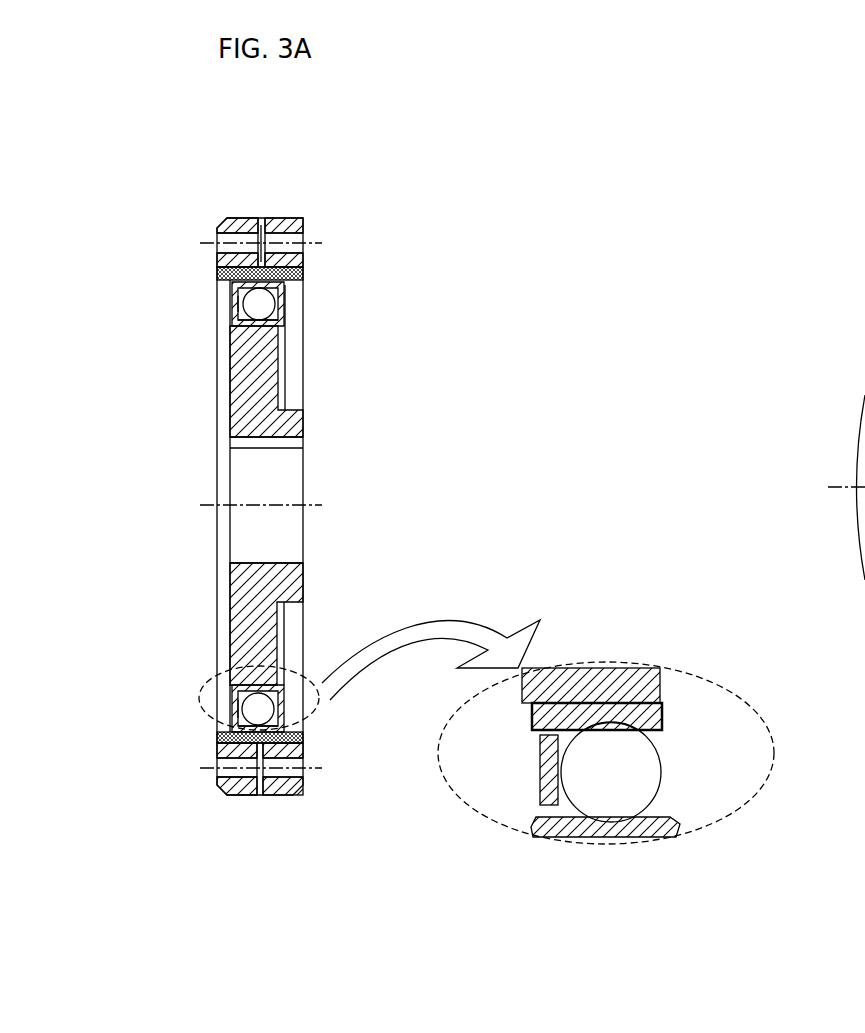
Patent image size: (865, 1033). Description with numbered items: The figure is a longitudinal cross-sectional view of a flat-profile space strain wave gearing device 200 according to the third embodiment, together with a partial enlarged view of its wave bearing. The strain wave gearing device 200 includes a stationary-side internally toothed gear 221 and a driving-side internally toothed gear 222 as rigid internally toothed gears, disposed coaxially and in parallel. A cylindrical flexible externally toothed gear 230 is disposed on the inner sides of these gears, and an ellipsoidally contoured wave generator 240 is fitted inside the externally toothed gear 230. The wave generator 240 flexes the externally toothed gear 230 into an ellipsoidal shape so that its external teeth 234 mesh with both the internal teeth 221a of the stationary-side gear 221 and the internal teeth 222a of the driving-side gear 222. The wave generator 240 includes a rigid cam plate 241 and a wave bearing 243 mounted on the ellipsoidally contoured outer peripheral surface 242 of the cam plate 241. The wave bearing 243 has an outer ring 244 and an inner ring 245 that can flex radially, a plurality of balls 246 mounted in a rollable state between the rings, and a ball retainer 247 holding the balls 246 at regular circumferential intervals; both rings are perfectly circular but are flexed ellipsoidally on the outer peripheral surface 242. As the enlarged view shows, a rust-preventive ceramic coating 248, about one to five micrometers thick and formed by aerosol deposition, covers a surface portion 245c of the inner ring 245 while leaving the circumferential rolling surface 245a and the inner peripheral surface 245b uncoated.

The flat-profile space strain wave gearing device 200 is at (312, 217).
The stationary-side internally toothed gear 221 is at (308, 260).
The internal teeth of the stationary-side internally toothed gear 221a is at (305, 283).
The driving-side internally toothed gear 222 is at (212, 259).
The internal teeth of the driving-side internally toothed gear 222a is at (215, 291).
The external teeth 234 is at (261, 268).
The cylindrical flexible externally toothed gear 230 is at (300, 288).
The wave generator 240 is at (314, 422).
The rigid cam plate 241 is at (223, 405).
The ellipsoidally contoured outer peripheral surface 242 is at (276, 325).
The wave bearing 243 is at (214, 304).
The outer ring 244 is at (283, 298).
The inner ring 245 is at (280, 318).
The rolling surface 245a is at (630, 706).
The inner peripheral surface 245b is at (562, 704).
The surface portion 245c is at (532, 712).
The balls 246 is at (259, 305).
The ball retainer 247 is at (238, 312).
The ceramic coating 248 is at (674, 730).